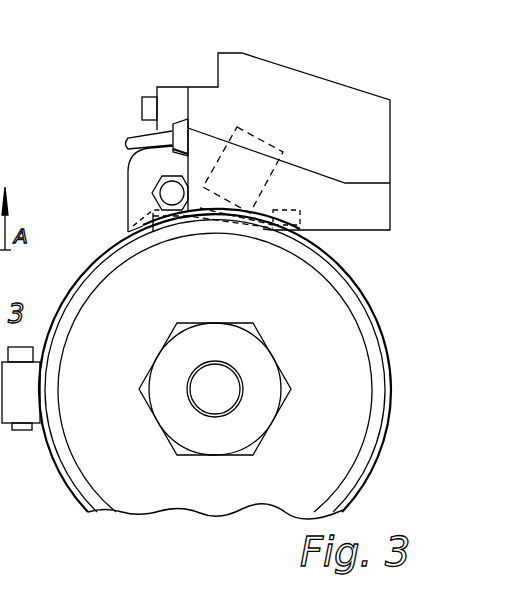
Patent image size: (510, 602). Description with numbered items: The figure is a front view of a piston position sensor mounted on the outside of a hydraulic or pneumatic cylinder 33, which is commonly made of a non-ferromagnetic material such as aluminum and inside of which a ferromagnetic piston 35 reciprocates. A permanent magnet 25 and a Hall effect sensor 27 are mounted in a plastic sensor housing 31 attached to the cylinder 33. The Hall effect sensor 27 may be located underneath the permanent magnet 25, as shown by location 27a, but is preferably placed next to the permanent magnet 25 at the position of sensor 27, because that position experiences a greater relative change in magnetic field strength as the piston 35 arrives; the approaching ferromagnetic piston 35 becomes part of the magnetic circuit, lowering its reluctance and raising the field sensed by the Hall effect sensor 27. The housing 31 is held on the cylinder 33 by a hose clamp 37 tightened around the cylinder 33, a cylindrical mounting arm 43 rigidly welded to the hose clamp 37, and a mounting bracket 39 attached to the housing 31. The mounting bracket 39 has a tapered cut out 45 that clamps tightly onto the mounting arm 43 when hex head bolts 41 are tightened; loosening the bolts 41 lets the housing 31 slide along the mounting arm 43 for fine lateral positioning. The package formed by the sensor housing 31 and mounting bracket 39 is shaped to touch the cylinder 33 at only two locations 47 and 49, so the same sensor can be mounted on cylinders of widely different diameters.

The permanent magnet 25 is at (265, 138).
The Hall effect sensor 27 is at (298, 214).
The Hall effect sensor location 27a is at (208, 220).
The sensor housing 31 is at (314, 74).
The cylinder 33 is at (392, 365).
The piston 35 is at (141, 466).
The hose clamp 37 is at (72, 284).
The mounting bracket 39 is at (165, 87).
The hex head bolts 41 is at (142, 110).
The mounting arm 43 is at (175, 193).
The tapered cut out 45 is at (153, 231).
The contact location 47 is at (263, 231).
The contact location 49 is at (137, 233).